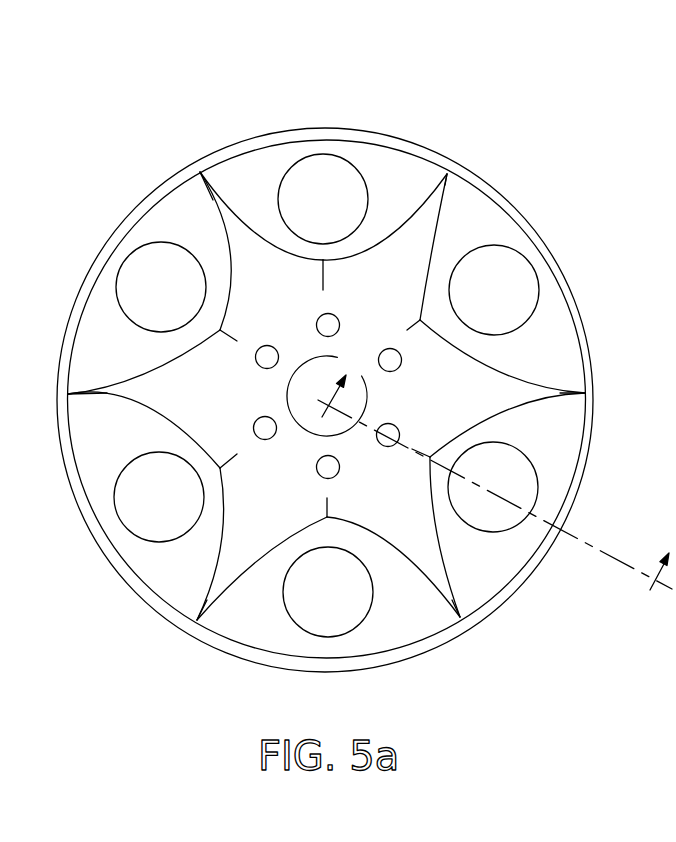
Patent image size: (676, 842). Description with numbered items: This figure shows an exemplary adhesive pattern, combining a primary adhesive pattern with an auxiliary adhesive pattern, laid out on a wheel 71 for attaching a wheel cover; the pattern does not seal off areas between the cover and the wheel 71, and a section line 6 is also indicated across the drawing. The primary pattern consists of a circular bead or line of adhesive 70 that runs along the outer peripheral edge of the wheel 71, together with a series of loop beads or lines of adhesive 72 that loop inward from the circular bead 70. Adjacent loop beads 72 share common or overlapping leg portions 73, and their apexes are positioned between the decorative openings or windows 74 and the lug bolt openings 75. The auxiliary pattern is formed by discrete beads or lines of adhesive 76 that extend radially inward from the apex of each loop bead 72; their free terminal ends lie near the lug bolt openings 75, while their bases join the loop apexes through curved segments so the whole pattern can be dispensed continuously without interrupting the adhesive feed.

The section line 6- 6 is at (481, 466).
The circular bead or line of adhesive 70 is at (504, 203).
The wheel 71 is at (458, 150).
The loop beads or lines of adhesive 72 is at (232, 246).
The common or overlapping leg portions 73 is at (208, 186).
The decorative openings or windows 74 is at (350, 193).
The lug bolt openings 75 is at (387, 428).
The discrete beads or lines of adhesive 76 is at (240, 340).